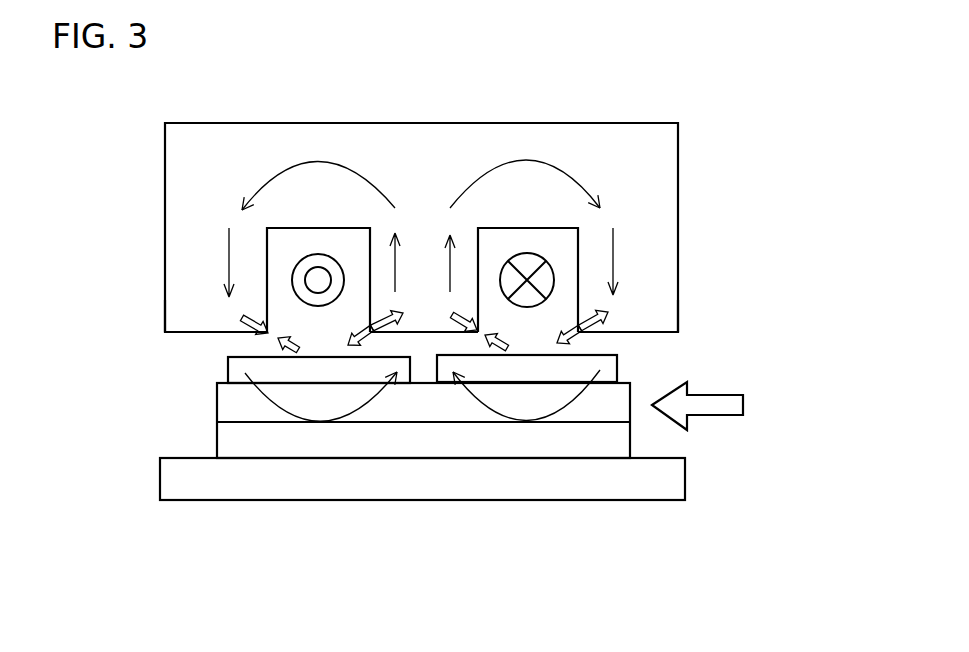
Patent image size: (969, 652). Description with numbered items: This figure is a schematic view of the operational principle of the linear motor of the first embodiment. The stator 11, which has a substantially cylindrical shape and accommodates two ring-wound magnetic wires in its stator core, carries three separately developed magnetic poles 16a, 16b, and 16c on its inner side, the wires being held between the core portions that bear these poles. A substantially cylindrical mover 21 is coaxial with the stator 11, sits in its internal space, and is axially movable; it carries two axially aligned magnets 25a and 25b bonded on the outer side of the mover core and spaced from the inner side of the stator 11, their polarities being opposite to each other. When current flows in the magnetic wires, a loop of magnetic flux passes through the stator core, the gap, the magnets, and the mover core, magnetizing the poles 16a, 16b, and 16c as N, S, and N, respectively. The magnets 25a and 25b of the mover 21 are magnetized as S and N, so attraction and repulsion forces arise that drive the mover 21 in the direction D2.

The stator 11 is at (440, 170).
The magnetic pole 16a is at (202, 307).
The magnetic pole 16b is at (427, 298).
The magnetic pole 16c is at (642, 305).
The magnet 25a is at (292, 368).
The magnet 25b is at (555, 368).
The mover 21 is at (423, 433).
The direction D2 is at (710, 392).